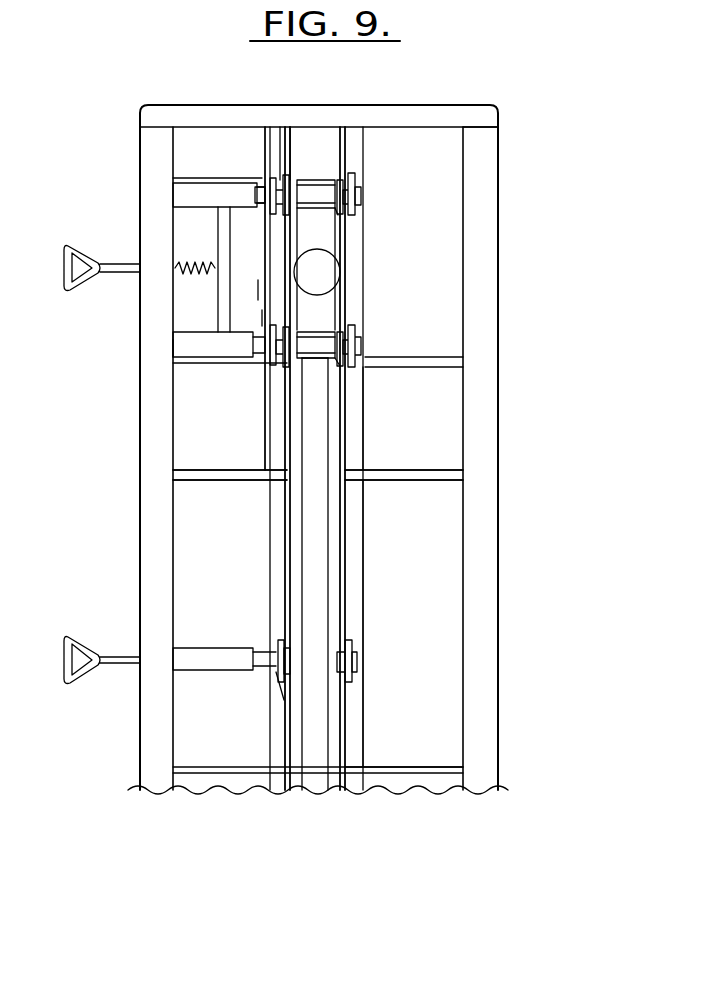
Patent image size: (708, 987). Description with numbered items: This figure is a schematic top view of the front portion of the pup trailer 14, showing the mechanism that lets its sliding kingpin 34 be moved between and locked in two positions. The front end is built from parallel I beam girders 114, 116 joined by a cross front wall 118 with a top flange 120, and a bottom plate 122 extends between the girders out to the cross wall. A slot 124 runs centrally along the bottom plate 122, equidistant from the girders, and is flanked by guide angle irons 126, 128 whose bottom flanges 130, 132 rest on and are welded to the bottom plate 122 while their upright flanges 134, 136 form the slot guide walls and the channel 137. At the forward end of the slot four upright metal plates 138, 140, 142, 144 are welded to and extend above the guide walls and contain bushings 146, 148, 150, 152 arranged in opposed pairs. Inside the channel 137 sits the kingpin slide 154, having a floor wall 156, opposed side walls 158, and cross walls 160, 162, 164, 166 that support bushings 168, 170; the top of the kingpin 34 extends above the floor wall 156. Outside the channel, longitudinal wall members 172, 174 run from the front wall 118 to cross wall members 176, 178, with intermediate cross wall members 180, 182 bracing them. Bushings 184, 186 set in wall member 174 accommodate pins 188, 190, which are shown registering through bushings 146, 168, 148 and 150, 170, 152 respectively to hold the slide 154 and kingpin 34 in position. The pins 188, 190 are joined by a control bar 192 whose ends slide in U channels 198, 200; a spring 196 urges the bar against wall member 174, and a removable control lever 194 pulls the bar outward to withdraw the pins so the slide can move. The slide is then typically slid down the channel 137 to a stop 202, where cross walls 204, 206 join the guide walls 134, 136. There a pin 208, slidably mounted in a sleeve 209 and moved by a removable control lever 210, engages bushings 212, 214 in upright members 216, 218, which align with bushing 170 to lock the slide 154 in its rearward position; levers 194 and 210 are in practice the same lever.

The pup trailer 14 is at (505, 155).
The sliding kingpin 34 is at (330, 283).
The I beam girder 114 is at (494, 586).
The I beam girder 116 is at (170, 586).
The cross front wall 118 is at (443, 130).
The top flange 120 is at (319, 116).
The bottom plate 122 is at (216, 154).
The slot 124 is at (317, 760).
The angle iron 126 is at (358, 605).
The angle iron 128 is at (278, 596).
The bottom flange 130 is at (365, 572).
The bottom flange 132 is at (268, 553).
The upright flange 134 is at (344, 628).
The upright flange 136 is at (287, 527).
The channel 137 is at (360, 548).
The upright metal plate 138 is at (286, 140).
The upright metal plate 140 is at (356, 208).
The upright metal plate 142 is at (278, 370).
The upright metal plate 144 is at (360, 346).
The bushing 146 is at (281, 140).
The bushing 148 is at (358, 192).
The bushing 150 is at (262, 367).
The bushing 152 is at (356, 325).
The kingpin slide 154 is at (321, 370).
The floor wall 156 is at (313, 234).
The side wall 158 is at (348, 140).
The cross wall 160 is at (345, 172).
The cross wall 162 is at (340, 236).
The cross wall 164 is at (345, 305).
The cross wall 166 is at (345, 370).
The bushing 168 is at (317, 194).
The bushing 170 is at (317, 345).
The longitudinal wall member 172 is at (378, 432).
The longitudinal wall member 174 is at (252, 140).
The cross wall member 176 is at (465, 480).
The cross wall member 178 is at (185, 480).
The intermediate cross wall member 180 is at (460, 357).
The intermediate cross wall member 182 is at (173, 357).
The bushing 184 is at (258, 178).
The bushing 186 is at (258, 290).
The pin 188 is at (258, 182).
The pin 190 is at (262, 318).
The control bar 192 is at (220, 252).
The removable control lever 194 is at (62, 268).
The spring 196 is at (185, 263).
The U channel 198 is at (230, 347).
The U channel 200 is at (215, 195).
The stop 202 is at (323, 762).
The cross wall 204 is at (415, 773).
The cross wall 206 is at (230, 773).
The pin 208 is at (258, 672).
The sleeve 209 is at (228, 670).
The removable control lever 210 is at (120, 668).
The bushing 212 is at (358, 660).
The bushing 214 is at (276, 651).
The upright member 216 is at (352, 680).
The upright member 218 is at (277, 700).